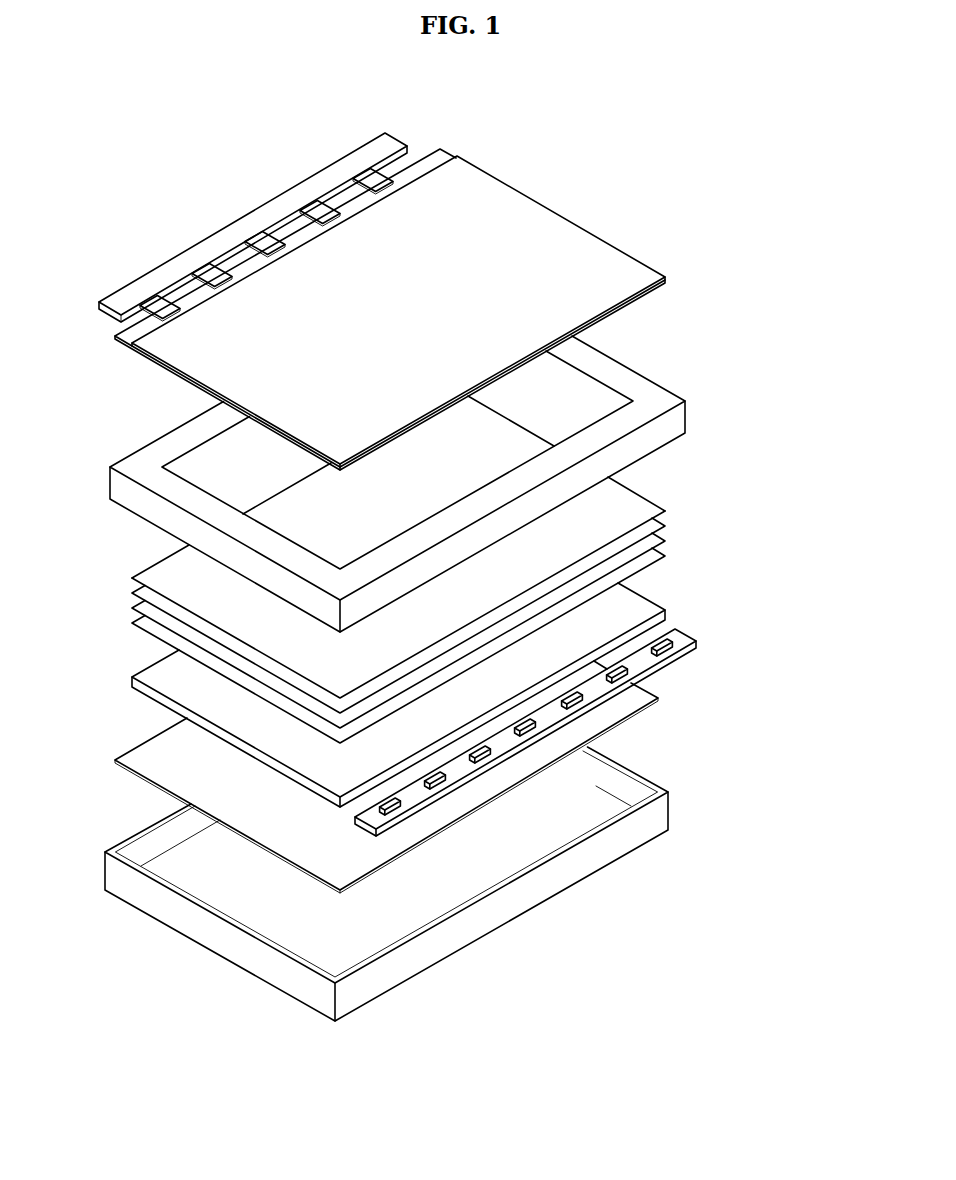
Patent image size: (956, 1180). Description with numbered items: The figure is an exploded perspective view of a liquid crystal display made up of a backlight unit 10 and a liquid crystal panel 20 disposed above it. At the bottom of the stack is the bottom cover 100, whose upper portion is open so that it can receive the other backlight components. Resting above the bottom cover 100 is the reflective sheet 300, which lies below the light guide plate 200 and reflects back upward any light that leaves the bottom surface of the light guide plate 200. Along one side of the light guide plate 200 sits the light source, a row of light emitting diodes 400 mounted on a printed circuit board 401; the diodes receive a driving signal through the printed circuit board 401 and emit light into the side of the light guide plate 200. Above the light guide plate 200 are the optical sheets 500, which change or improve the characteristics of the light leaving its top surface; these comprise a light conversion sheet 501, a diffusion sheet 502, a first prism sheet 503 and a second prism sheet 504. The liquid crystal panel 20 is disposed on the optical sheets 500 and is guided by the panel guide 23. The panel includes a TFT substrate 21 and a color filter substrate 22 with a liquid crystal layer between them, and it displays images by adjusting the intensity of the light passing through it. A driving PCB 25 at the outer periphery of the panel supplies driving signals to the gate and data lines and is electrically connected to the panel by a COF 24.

The backlight unit 10 is at (460, 678).
The liquid crystal panel 20 is at (390, 271).
The TFT substrate 21 is at (390, 285).
The color filter substrate 22 is at (398, 292).
The panel guide 23 is at (429, 484).
The COF (chip on film) 24 is at (266, 216).
The driving PCB 25 is at (250, 227).
The bottom cover 100 is at (440, 884).
The light guide plate 200 is at (427, 695).
The reflective sheet 300 is at (418, 777).
The light emitting diodes 400 is at (550, 731).
The printed circuit board 401 is at (563, 720).
The optical sheets 500 is at (453, 569).
The light conversion sheet 501 is at (430, 645).
The diffusion sheet 502 is at (430, 628).
The first prism sheet 503 is at (430, 609).
The second prism sheet 504 is at (430, 547).